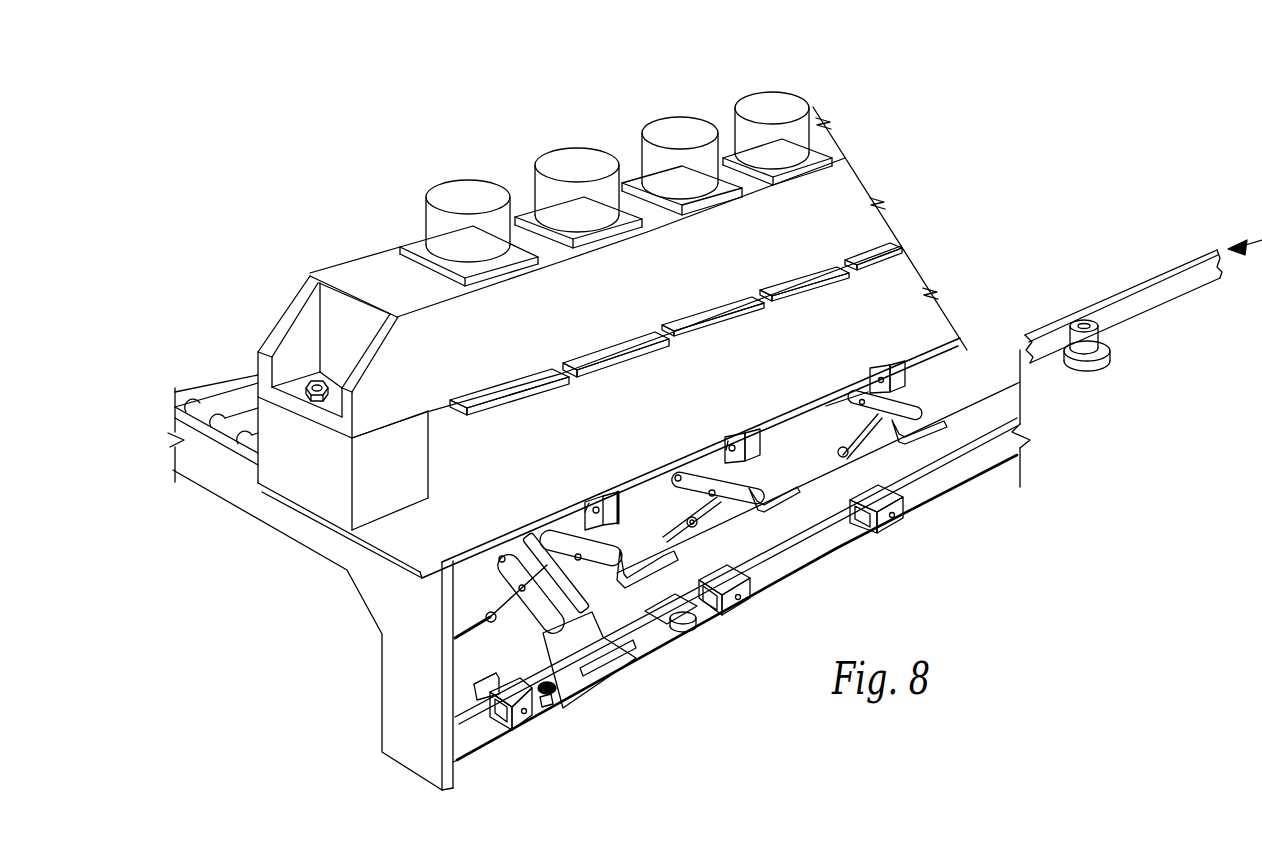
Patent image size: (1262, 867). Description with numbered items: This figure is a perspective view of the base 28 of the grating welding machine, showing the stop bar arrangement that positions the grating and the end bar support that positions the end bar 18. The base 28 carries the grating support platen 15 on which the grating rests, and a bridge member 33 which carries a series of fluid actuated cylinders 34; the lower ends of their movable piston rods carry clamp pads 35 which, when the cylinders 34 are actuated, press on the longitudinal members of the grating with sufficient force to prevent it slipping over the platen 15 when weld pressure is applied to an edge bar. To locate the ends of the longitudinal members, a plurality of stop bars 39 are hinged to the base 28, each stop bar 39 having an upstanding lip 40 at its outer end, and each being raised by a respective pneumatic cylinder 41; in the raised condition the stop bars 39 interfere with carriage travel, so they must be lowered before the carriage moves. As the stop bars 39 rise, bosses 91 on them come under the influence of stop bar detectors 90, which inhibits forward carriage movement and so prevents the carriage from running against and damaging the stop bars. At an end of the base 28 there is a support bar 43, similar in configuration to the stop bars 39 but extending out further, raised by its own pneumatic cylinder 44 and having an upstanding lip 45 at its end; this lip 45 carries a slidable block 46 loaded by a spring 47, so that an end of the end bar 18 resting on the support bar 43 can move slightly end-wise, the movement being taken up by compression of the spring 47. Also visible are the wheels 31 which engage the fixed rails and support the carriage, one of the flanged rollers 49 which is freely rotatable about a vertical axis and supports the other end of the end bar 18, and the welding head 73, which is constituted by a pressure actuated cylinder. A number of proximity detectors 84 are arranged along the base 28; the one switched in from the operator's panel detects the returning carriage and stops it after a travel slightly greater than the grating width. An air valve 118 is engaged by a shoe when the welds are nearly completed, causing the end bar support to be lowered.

The grating support platen 15 is at (532, 463).
The end bar 18 is at (1153, 295).
The base 28 is at (350, 614).
The wheels 31 is at (830, 403).
The bridge member 33 is at (483, 344).
The fluid actuated cylinders 34 is at (537, 188).
The clamp pads 35 is at (506, 397).
The stop bars 39 is at (597, 567).
The lip 40 is at (636, 563).
The pneumatic cylinders 41 is at (677, 540).
The support bar 43 is at (537, 618).
The pneumatic cylinder 44 is at (473, 622).
The upstanding lip 45 is at (627, 655).
The slidable block 46 is at (593, 687).
The spring 47 is at (547, 710).
The flanged rollers 49 is at (1080, 370).
The welding head 73 is at (228, 397).
The proximity detectors 84 is at (505, 730).
The stop bar detectors 90 is at (592, 494).
The bosses 91 is at (588, 506).
The air valve 118 is at (674, 643).